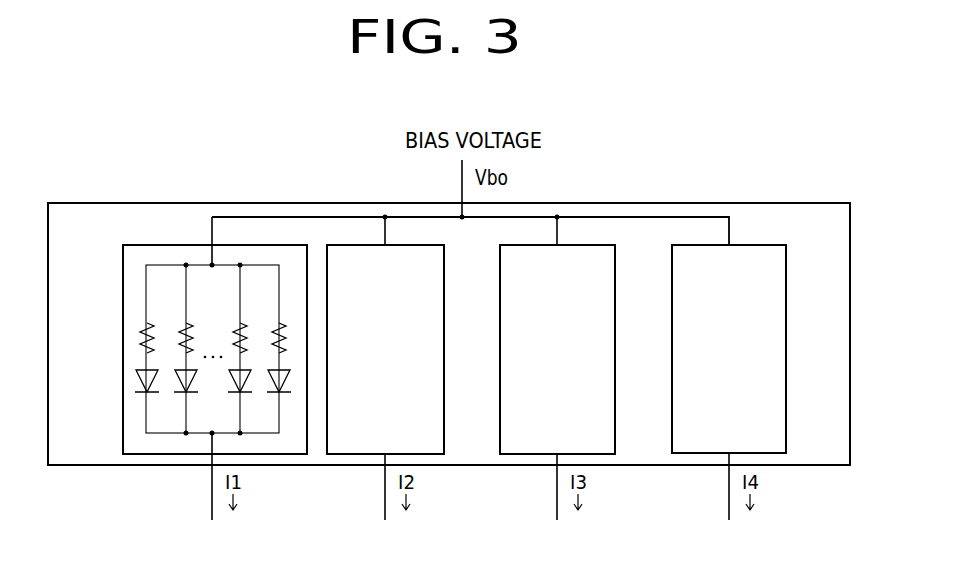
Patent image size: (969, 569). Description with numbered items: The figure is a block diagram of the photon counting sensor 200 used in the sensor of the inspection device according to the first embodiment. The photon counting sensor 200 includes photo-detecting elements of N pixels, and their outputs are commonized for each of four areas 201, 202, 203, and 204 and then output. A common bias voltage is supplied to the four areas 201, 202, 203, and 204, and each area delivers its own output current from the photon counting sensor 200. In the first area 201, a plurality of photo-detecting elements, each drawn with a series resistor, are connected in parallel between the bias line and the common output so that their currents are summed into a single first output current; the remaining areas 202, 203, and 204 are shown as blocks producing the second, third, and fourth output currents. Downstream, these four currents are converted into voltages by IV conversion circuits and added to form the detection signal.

The photon counting sensor 200 is at (133, 208).
The area 201 is at (122, 365).
The area 202 is at (430, 367).
The area 203 is at (602, 367).
The area 204 is at (775, 367).